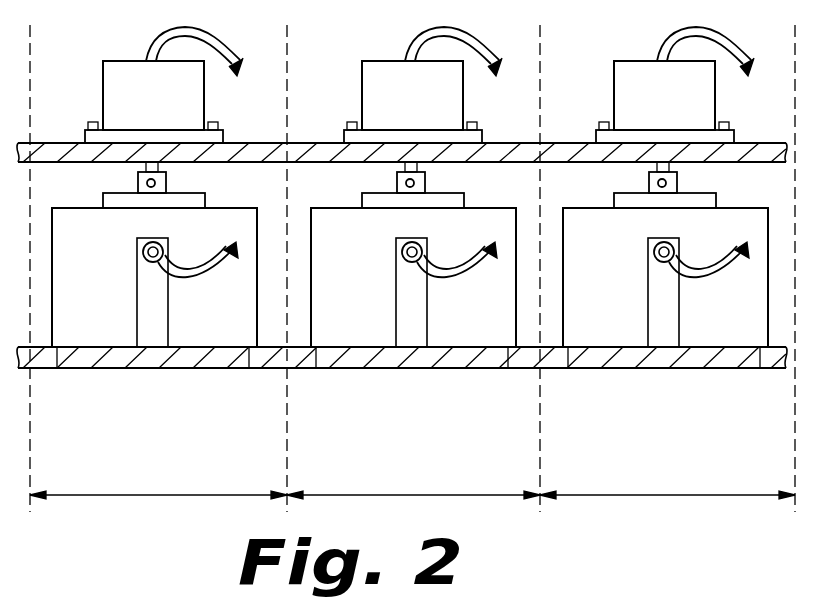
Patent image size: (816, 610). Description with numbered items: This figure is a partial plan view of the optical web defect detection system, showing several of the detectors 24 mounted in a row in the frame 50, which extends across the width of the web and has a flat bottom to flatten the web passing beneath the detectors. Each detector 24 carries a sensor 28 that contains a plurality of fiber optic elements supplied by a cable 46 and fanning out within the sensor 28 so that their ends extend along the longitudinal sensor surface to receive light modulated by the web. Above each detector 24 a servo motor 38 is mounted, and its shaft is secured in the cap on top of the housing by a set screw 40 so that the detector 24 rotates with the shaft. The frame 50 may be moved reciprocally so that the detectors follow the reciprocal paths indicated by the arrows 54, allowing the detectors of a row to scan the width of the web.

The detector 24 is at (455, 322).
The sensor 28 is at (143, 325).
The servo motor 38 is at (103, 97).
The set screw 40 is at (168, 183).
The cable 46 is at (185, 277).
The frame 50 is at (765, 144).
The arrows 54 is at (124, 495).